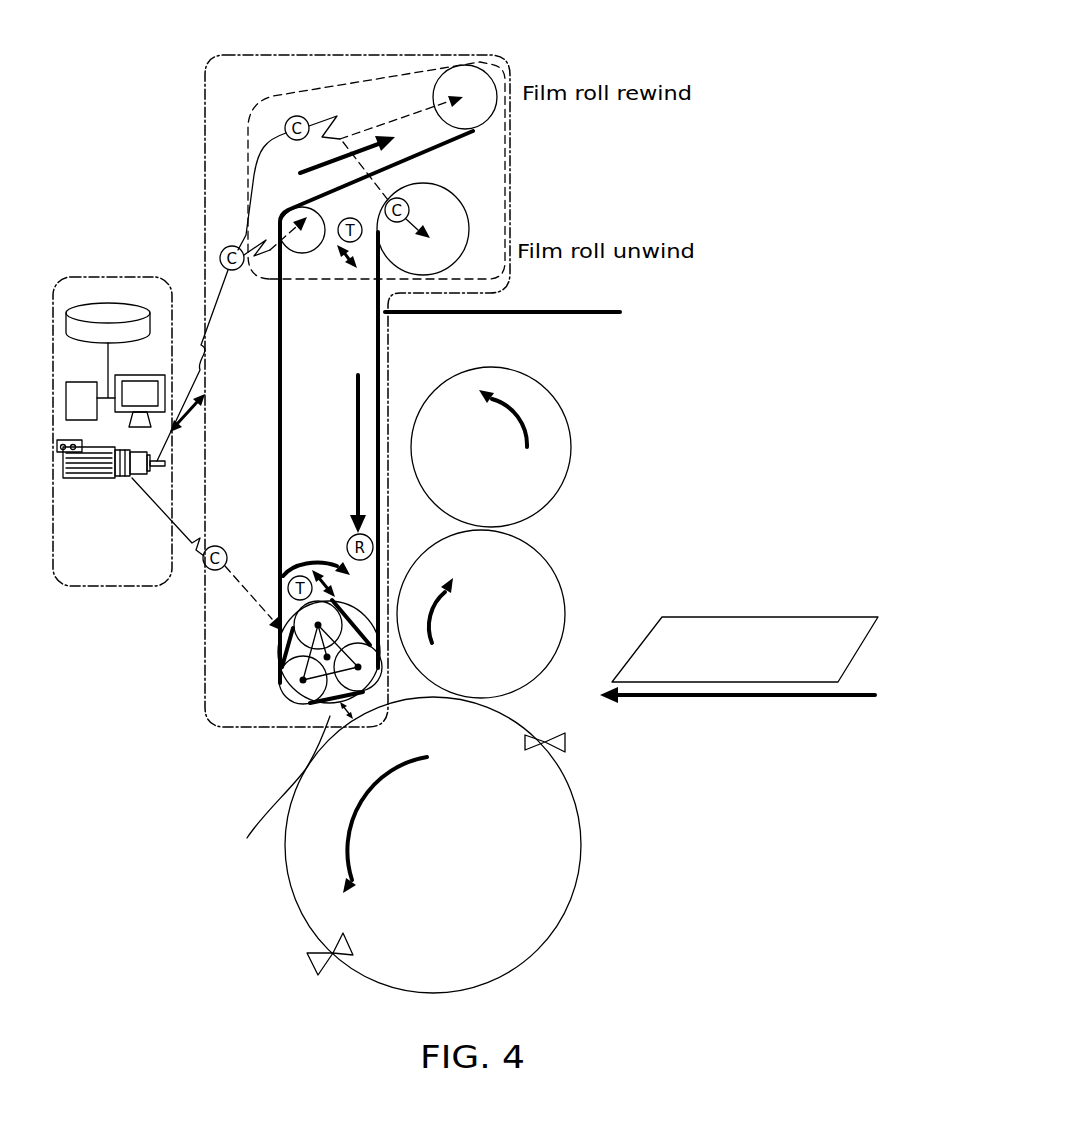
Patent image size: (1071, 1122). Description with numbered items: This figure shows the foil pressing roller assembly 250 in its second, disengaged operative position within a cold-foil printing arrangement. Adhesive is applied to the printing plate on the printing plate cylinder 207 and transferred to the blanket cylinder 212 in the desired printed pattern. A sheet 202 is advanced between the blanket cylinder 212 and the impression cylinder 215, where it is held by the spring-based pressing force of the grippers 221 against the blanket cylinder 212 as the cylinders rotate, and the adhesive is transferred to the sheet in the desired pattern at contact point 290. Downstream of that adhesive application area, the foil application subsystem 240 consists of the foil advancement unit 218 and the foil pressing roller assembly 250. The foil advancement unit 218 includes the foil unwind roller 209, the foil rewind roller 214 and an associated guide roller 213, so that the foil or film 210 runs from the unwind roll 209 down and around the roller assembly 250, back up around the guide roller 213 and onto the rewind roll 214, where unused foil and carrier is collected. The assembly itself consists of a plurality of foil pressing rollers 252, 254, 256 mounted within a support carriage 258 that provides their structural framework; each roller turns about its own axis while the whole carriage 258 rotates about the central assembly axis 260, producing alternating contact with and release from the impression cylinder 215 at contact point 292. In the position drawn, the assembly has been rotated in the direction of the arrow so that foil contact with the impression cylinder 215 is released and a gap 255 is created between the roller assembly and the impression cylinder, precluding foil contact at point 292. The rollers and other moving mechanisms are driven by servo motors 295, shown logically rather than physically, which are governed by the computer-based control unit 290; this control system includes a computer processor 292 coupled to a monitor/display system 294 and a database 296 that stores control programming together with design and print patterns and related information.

The sheet 202 is at (785, 620).
The printing plate cylinder 207 is at (565, 405).
The foil unwind roller 209 is at (470, 218).
The foil or film 210 is at (279, 365).
The blanket cylinder 212 is at (557, 580).
The guide roller 213 is at (280, 215).
The foil rewind roller 214 is at (433, 90).
The impression cylinder 215 is at (580, 808).
The foil advancement unit 218 is at (500, 68).
The grippers 221 is at (545, 738).
The foil application subsystem 240 is at (205, 218).
The foil pressing roller assembly 250 is at (252, 716).
The foil pressing roller 252 is at (288, 632).
The foil pressing roller 254 is at (278, 698).
The gap 255 is at (318, 718).
The foil pressing roller 256 is at (372, 640).
The support carriage 258 is at (286, 643).
The assembly axis 260 is at (327, 660).
The control unit 290 is at (60, 276).
The computer processor 292 is at (84, 395).
The monitor/display system 294 is at (155, 375).
The servo motors 295 is at (84, 480).
The database 296 is at (108, 308).